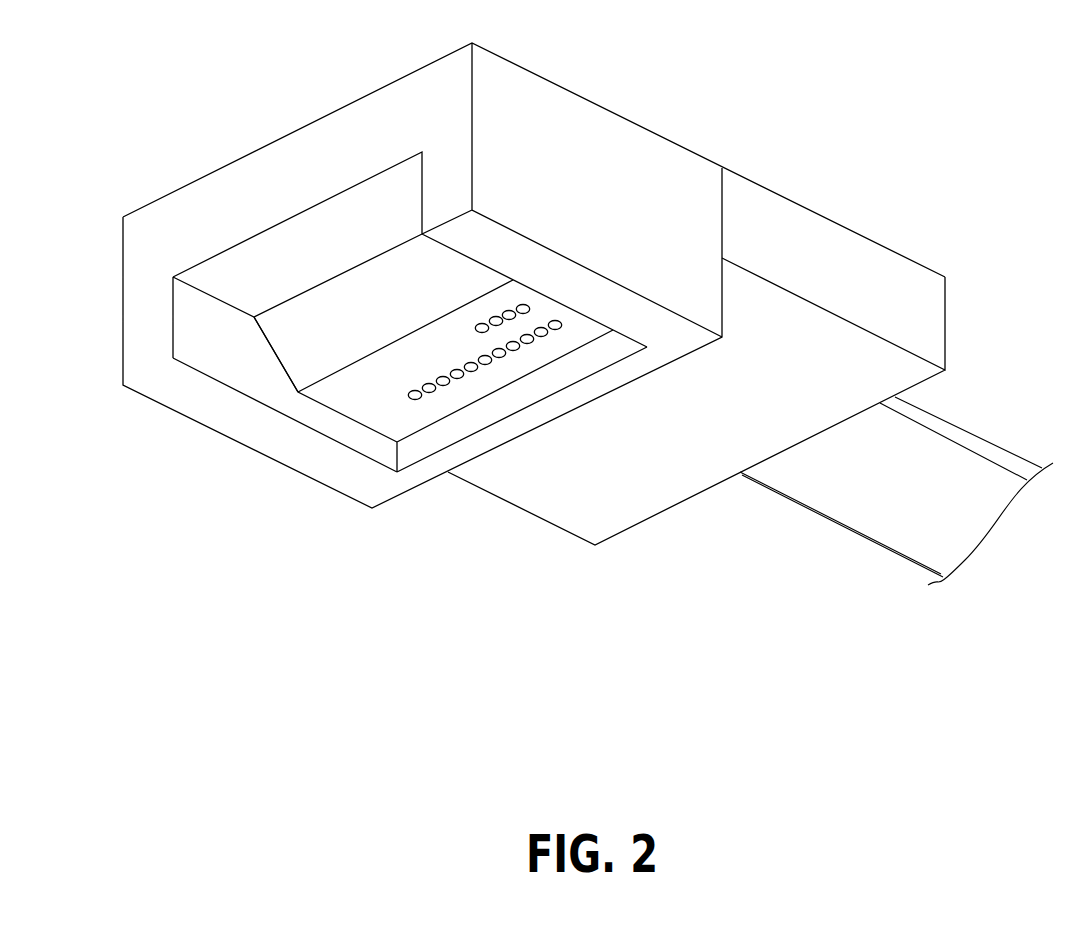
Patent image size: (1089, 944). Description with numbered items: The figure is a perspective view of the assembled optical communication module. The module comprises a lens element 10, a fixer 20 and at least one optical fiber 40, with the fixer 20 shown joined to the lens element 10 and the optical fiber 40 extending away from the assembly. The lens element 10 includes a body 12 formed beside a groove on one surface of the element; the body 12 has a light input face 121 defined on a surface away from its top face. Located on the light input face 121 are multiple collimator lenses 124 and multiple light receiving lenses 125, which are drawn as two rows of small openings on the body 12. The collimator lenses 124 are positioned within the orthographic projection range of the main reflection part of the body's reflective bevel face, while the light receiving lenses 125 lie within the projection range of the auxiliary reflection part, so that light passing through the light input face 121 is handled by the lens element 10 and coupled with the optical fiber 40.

The lens element 10 is at (555, 132).
The fixer 20 is at (807, 247).
The body 12 is at (400, 407).
The light input face 121 is at (350, 400).
The collimator lenses 124 is at (517, 346).
The light receiving lenses 125 is at (482, 330).
The optical fiber 40 is at (952, 467).